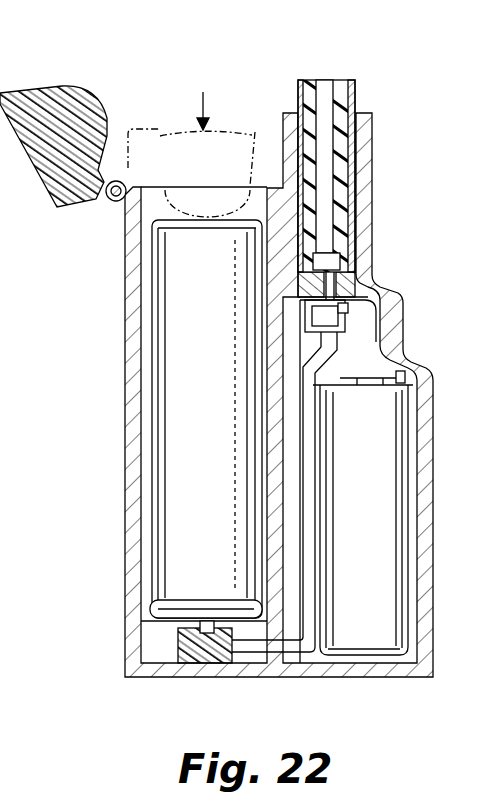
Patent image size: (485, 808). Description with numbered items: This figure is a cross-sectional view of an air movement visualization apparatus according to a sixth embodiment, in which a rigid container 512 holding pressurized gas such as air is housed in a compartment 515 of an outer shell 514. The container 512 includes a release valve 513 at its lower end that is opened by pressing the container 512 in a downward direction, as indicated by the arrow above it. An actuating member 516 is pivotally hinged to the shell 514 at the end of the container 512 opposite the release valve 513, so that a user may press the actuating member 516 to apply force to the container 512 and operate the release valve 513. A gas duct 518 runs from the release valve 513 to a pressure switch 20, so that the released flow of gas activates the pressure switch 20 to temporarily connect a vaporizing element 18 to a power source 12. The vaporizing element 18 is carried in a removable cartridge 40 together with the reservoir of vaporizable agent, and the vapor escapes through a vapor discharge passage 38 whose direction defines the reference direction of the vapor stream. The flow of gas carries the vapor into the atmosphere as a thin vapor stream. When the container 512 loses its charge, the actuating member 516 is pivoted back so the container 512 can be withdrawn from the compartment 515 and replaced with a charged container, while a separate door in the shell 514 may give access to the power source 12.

The power source 12 is at (386, 518).
The vaporizing element 18 is at (333, 262).
The pressure switch 20 is at (348, 310).
The vapor discharge passage 38 is at (328, 92).
The cartridge 40 is at (355, 90).
The rigid container 512 is at (215, 421).
The release valve 513 is at (207, 624).
The outer shell 514 is at (125, 338).
The compartment 515 is at (162, 202).
The actuating member 516 is at (38, 88).
The gas duct 518 is at (297, 652).